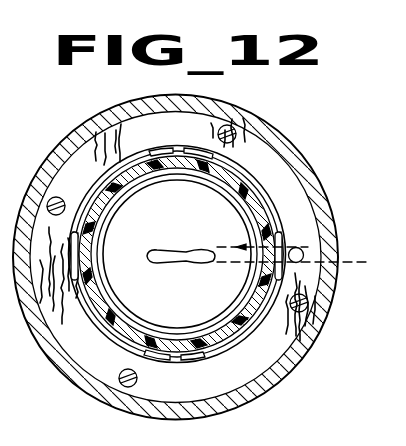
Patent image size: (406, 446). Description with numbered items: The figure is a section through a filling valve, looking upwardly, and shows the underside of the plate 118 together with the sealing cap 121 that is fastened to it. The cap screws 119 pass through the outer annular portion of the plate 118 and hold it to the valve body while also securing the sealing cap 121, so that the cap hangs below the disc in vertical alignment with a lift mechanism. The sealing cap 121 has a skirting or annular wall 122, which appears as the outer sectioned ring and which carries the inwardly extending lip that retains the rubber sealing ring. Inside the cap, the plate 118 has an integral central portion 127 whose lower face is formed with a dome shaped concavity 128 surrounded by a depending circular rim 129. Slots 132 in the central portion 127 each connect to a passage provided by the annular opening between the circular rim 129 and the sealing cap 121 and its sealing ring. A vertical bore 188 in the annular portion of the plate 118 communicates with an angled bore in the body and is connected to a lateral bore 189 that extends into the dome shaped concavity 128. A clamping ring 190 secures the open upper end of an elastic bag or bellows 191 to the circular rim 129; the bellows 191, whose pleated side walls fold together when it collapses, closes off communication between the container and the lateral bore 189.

The plate 118 is at (187, 143).
The cap screws 119 is at (236, 130).
The sealing cap 121 is at (343, 241).
The annular wall 122 is at (327, 290).
The central portion 127 is at (128, 215).
The dome shaped concavity 128 is at (196, 236).
The circular rim 129 is at (236, 318).
The slots 132 is at (155, 150).
The vertical bore 188 is at (309, 257).
The lateral bore 189 is at (281, 240).
The clamping ring 190 is at (127, 343).
The bellows 191 is at (245, 205).